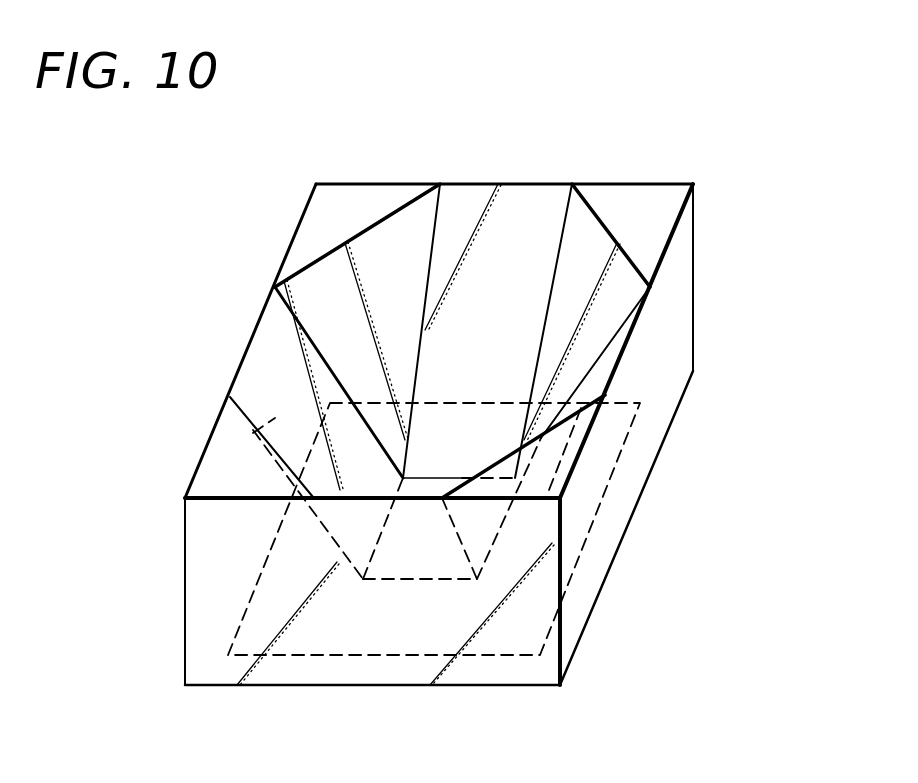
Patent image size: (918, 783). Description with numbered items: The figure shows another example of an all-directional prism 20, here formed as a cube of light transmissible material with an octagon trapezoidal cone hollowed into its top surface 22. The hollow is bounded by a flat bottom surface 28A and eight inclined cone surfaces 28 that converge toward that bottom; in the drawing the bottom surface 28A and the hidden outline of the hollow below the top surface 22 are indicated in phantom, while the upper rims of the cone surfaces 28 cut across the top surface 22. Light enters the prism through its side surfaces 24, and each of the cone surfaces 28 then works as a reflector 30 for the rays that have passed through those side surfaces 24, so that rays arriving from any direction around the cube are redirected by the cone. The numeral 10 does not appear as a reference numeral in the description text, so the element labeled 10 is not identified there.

The molded article (phantom) 10 is at (519, 665).
The all-directional prism 20 is at (704, 287).
The top surface 22 is at (328, 222).
The side surfaces 24 is at (622, 489).
The cone surfaces 28 is at (527, 202).
The bottom surface 28A is at (407, 570).
The reflector 30 is at (250, 432).